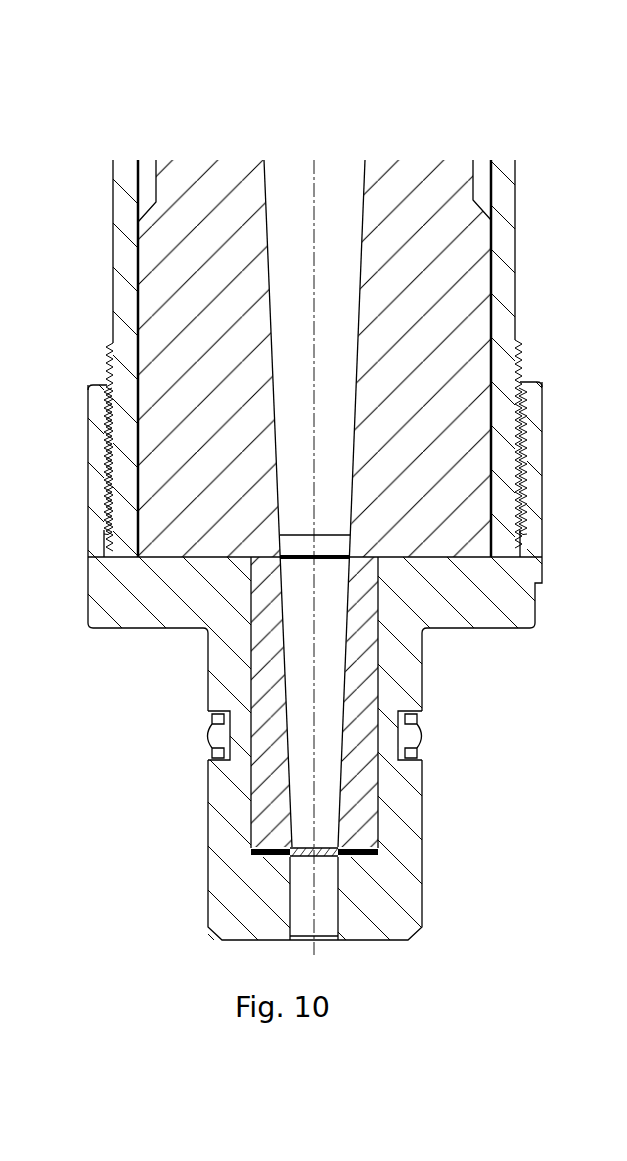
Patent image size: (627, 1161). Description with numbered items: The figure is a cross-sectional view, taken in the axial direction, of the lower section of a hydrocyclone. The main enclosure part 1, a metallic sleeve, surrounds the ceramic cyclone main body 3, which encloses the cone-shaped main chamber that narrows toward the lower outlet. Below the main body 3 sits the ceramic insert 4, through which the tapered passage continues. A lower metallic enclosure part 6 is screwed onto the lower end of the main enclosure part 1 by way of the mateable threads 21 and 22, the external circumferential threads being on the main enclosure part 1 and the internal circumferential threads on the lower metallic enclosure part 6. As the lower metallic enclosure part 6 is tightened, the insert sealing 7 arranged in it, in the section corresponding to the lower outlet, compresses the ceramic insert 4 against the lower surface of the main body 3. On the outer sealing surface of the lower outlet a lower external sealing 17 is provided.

The main enclosure part 1 is at (500, 327).
The cyclone main body 3 is at (472, 282).
The ceramic insert 4 is at (258, 820).
The lower metallic enclosure part 6 is at (540, 450).
The insert sealing 7 is at (253, 856).
The lower external sealing 17 is at (407, 738).
The mateable threads 21 is at (525, 360).
The mateable threads 22 is at (525, 408).